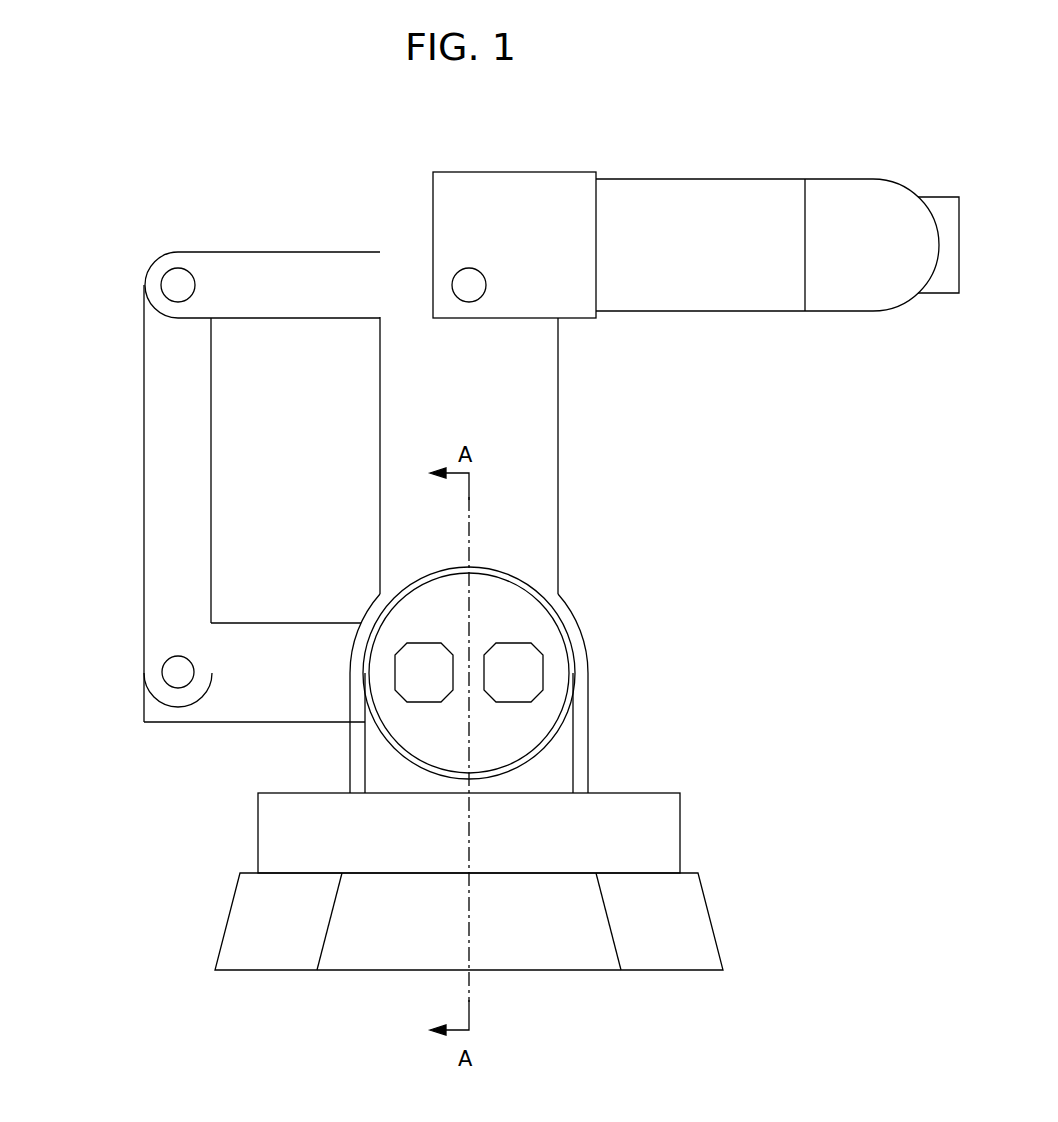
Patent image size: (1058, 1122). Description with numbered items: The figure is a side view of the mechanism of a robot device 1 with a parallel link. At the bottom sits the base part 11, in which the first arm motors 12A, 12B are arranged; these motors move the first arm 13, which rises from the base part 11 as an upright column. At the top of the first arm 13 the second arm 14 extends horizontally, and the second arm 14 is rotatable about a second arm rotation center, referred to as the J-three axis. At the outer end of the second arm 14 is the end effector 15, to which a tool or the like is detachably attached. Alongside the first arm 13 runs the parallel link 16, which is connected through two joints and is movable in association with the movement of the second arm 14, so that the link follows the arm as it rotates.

The robot device 1 is at (92, 227).
The base part 11 is at (638, 822).
The first arm motor 12A is at (428, 668).
The first arm motor 12B is at (516, 668).
The first arm 13 is at (408, 325).
The second arm 14 is at (708, 212).
The end effector 15 is at (940, 212).
The parallel link 16 is at (232, 718).